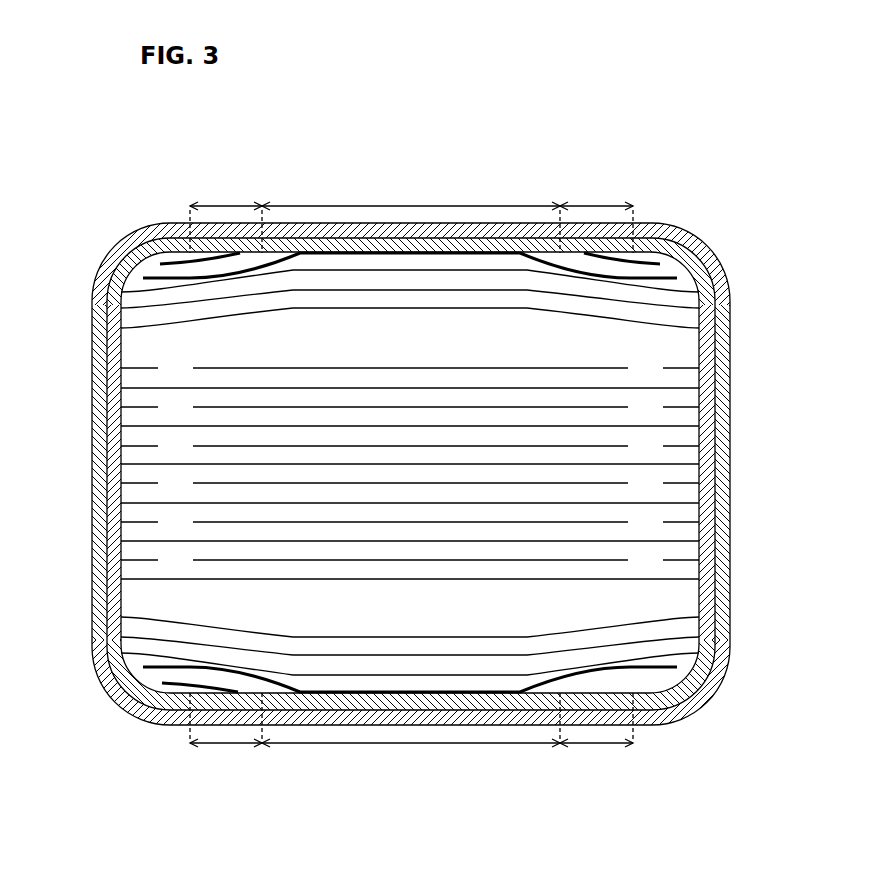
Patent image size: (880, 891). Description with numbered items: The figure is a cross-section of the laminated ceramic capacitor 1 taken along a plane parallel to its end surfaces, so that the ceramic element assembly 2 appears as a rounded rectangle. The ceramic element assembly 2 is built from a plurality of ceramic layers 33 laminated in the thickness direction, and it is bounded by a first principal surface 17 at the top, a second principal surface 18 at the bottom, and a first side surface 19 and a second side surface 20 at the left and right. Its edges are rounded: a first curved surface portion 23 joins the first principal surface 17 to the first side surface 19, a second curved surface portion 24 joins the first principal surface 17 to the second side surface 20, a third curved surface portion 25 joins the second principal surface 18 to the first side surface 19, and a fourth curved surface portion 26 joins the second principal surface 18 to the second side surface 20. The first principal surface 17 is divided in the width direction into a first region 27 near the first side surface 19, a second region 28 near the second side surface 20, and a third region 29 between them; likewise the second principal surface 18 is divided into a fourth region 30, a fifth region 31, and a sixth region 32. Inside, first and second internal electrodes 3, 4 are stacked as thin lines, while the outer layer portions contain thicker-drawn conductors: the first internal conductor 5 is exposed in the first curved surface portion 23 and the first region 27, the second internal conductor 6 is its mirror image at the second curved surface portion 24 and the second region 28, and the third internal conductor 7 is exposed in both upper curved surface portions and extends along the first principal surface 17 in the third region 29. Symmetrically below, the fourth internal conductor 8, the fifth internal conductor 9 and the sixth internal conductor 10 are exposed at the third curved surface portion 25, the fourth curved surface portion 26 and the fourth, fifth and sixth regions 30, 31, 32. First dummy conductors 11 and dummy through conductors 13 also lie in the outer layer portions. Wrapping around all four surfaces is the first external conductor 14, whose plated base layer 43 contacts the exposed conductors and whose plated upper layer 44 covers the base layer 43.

The laminated ceramic capacitor 1 is at (120, 119).
The ceramic element assembly 2 is at (704, 345).
The first internal electrode 3 is at (647, 579).
The second internal electrode 4 is at (612, 521).
The first internal conductor 5 is at (172, 264).
The second internal conductor 6 is at (653, 262).
The third internal conductor 7 is at (162, 278).
The fourth internal conductor 8 is at (158, 712).
The fifth internal conductor 9 is at (679, 710).
The sixth internal conductor 10 is at (133, 700).
The first dummy conductors 11 is at (137, 367).
The dummy through conductors 13 is at (143, 618).
The first external conductor 14 is at (38, 432).
The first principal surface 17 is at (413, 138).
The second principal surface 18 is at (415, 802).
The first side surface 19 is at (122, 372).
The second side surface 20 is at (700, 375).
The first curved surface portion 23 is at (125, 272).
The second curved surface portion 24 is at (680, 252).
The third curved surface portion 25 is at (110, 680).
The fourth curved surface portion 26 is at (705, 690).
The first region 27 is at (237, 211).
The second region 28 is at (600, 211).
The third region 29 is at (411, 211).
The fourth region 30 is at (237, 737).
The fifth region 31 is at (622, 736).
The sixth region 32 is at (411, 736).
The ceramic layers 33 is at (676, 455).
The base layer 43 is at (97, 433).
The upper layer 44 is at (100, 479).